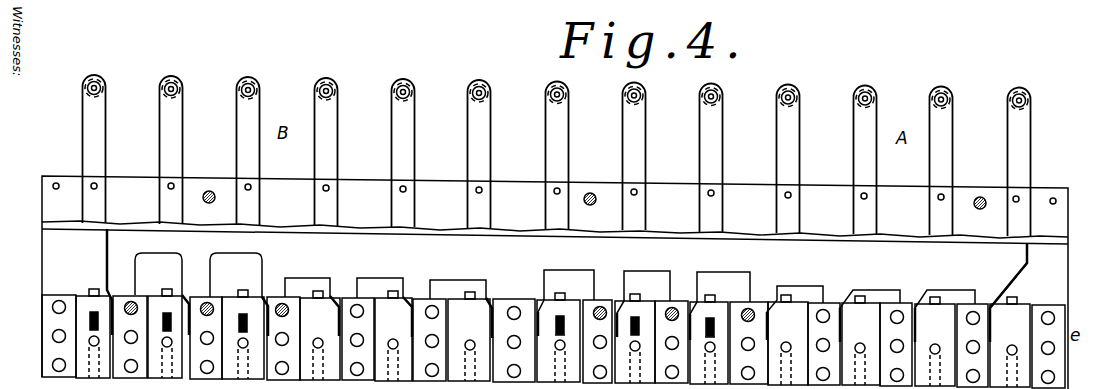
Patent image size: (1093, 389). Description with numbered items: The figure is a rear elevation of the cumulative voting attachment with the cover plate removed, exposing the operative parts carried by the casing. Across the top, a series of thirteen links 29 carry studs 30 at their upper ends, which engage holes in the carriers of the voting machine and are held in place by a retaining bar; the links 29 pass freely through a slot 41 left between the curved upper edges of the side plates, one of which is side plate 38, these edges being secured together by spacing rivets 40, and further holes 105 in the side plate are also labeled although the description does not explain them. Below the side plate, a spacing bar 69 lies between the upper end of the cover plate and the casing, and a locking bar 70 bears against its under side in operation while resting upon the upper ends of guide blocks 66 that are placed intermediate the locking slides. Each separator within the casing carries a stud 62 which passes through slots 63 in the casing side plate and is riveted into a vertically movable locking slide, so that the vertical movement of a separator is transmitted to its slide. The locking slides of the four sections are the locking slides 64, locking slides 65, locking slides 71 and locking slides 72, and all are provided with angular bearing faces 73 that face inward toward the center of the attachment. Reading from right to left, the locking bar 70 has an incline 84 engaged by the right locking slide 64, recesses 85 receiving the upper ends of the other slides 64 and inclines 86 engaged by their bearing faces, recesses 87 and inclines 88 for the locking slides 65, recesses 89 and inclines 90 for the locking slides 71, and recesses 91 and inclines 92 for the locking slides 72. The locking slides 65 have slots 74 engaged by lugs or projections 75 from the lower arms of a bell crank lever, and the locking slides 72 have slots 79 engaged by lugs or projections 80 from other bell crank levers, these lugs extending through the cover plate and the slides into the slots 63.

The links 29 is at (480, 136).
The studs 30 is at (472, 85).
The side plate 38 is at (555, 282).
The slot 41 is at (133, 190).
The pivot holes 105 is at (252, 186).
The spacing rivets 40 is at (210, 191).
The spacing bar 69 is at (98, 226).
The locking bar 70 is at (567, 285).
The recesses 91 is at (156, 265).
The slots 63 is at (180, 288).
The inclines 92 is at (199, 303).
The recesses 89 is at (363, 275).
The inclines 90 is at (333, 301).
The inclines 88 is at (540, 297).
The recesses 87 is at (722, 272).
The inclines 86 is at (772, 300).
The recesses 85 is at (948, 290).
The incline 84 is at (1007, 290).
The slots 79 is at (90, 318).
The locking slides 72 is at (170, 334).
The lugs or projections 80 is at (100, 322).
The locking slides 71 is at (395, 336).
The angular bearing faces 73 is at (344, 339).
The guide blocks 66 is at (779, 343).
The locking slides 65 is at (634, 339).
The slots 74 is at (565, 328).
The lugs or projections 75 is at (556, 338).
The locking slides 64 is at (900, 341).
The studs 62 is at (99, 341).